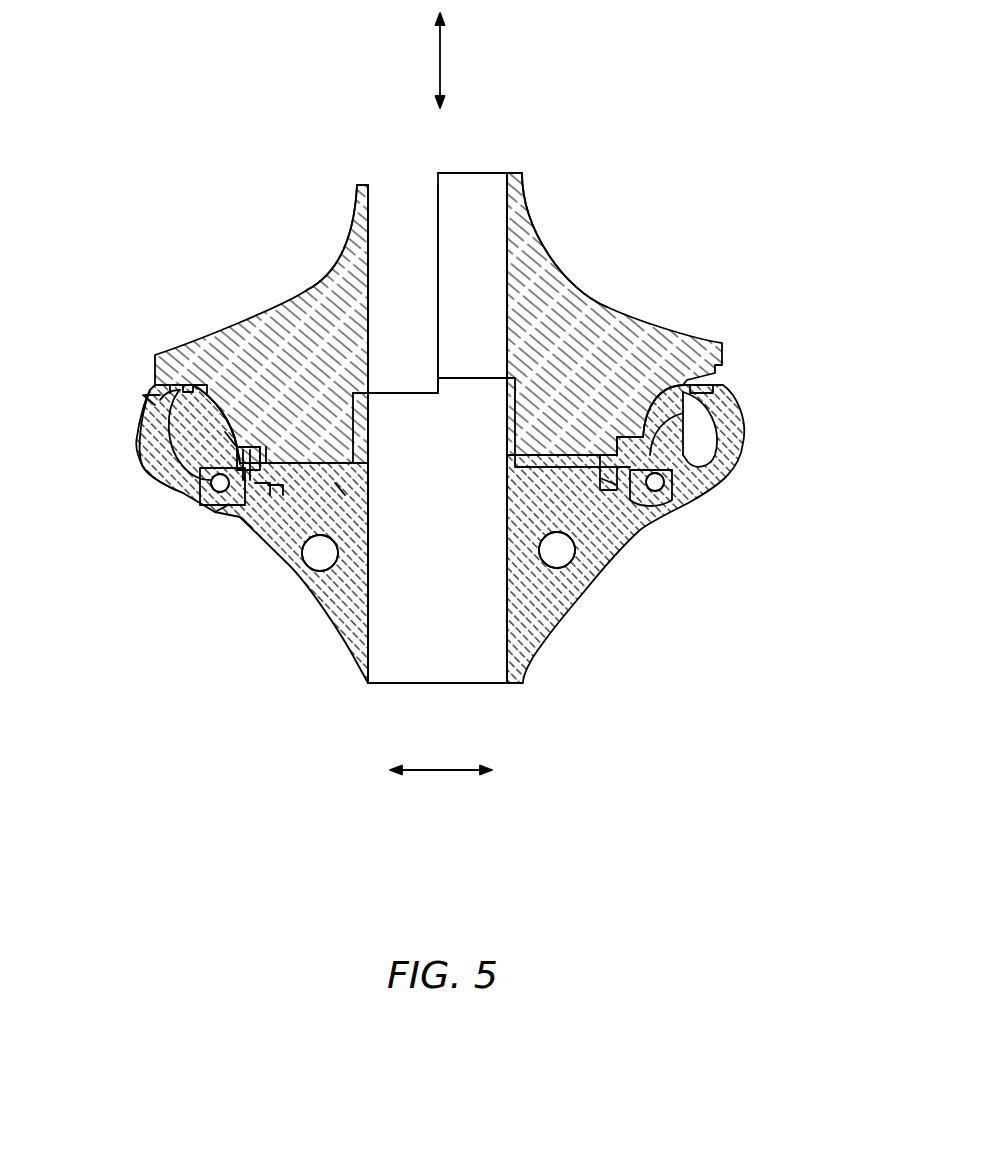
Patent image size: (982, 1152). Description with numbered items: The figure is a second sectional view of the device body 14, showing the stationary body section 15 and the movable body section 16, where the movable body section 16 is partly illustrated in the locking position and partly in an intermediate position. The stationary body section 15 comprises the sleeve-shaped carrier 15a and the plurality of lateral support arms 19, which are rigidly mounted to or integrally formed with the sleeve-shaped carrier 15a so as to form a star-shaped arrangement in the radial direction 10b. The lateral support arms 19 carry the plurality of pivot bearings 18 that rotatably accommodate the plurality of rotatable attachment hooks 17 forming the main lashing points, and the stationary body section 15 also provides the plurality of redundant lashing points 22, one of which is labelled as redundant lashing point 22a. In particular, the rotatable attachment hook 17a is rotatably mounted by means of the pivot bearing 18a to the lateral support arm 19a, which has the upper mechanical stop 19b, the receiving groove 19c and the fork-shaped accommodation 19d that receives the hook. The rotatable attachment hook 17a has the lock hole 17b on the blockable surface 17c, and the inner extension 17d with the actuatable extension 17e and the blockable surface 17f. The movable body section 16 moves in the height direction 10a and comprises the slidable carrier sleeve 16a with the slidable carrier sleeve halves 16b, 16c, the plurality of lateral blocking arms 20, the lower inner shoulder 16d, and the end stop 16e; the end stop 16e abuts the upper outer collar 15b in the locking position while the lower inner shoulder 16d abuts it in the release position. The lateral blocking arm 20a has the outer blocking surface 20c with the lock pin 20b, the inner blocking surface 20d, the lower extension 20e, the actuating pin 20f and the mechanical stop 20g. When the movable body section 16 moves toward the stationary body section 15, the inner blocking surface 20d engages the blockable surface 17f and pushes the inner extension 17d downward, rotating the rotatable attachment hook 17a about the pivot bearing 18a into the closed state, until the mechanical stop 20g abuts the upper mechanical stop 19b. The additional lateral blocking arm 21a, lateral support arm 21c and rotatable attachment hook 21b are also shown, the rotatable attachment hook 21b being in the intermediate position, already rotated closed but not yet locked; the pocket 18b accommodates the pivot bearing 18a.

The height direction 10a is at (440, 62).
The radial direction 10b is at (433, 770).
The device body 14 is at (224, 192).
The stationary body section 15 is at (598, 591).
The sleeve-shaped carrier 15a is at (497, 660).
The upper outer collar 15b is at (352, 400).
The movable body section 16 is at (619, 214).
The slidable carrier sleeve 16a is at (467, 160).
The slidable carrier sleeve half 16b is at (419, 197).
The slidable carrier sleeve half 16c is at (490, 220).
The lower inner shoulder 16d is at (355, 458).
The end stop 16e is at (365, 399).
The rotatable attachment hooks 17 is at (767, 435).
The rotatable attachment hook 17a is at (152, 403).
The lock hole 17b is at (172, 392).
The blockable surface 17c is at (185, 372).
The inner extension 17d is at (213, 458).
The actuatable extension 17e is at (221, 438).
The blockable surface 17f is at (238, 436).
The pivot bearings 18 is at (684, 486).
The pivot bearing 18a is at (193, 484).
The bearing pocket 18b is at (213, 488).
The lateral support arms 19 is at (653, 545).
The lateral support arm 19a is at (243, 469).
The upper mechanical stop 19b is at (328, 447).
The receiving groove 19c is at (270, 490).
The fork-shaped accommodation 19d is at (223, 508).
The lateral blocking arms 20 is at (735, 340).
The lateral blocking arm 20a is at (208, 350).
The lock pin 20b is at (158, 393).
The outer blocking surface 20c is at (148, 400).
The inner blocking surface 20d is at (248, 518).
The lower extension 20e is at (264, 463).
The actuating pin 20f is at (262, 488).
The mechanical stop 20g is at (310, 482).
The lateral blocking arm 21a is at (603, 312).
The rotatable attachment hook 21b is at (723, 413).
The lateral support arm 21c is at (597, 533).
The redundant lashing points 22 is at (551, 567).
The redundant lashing point 22a is at (335, 483).